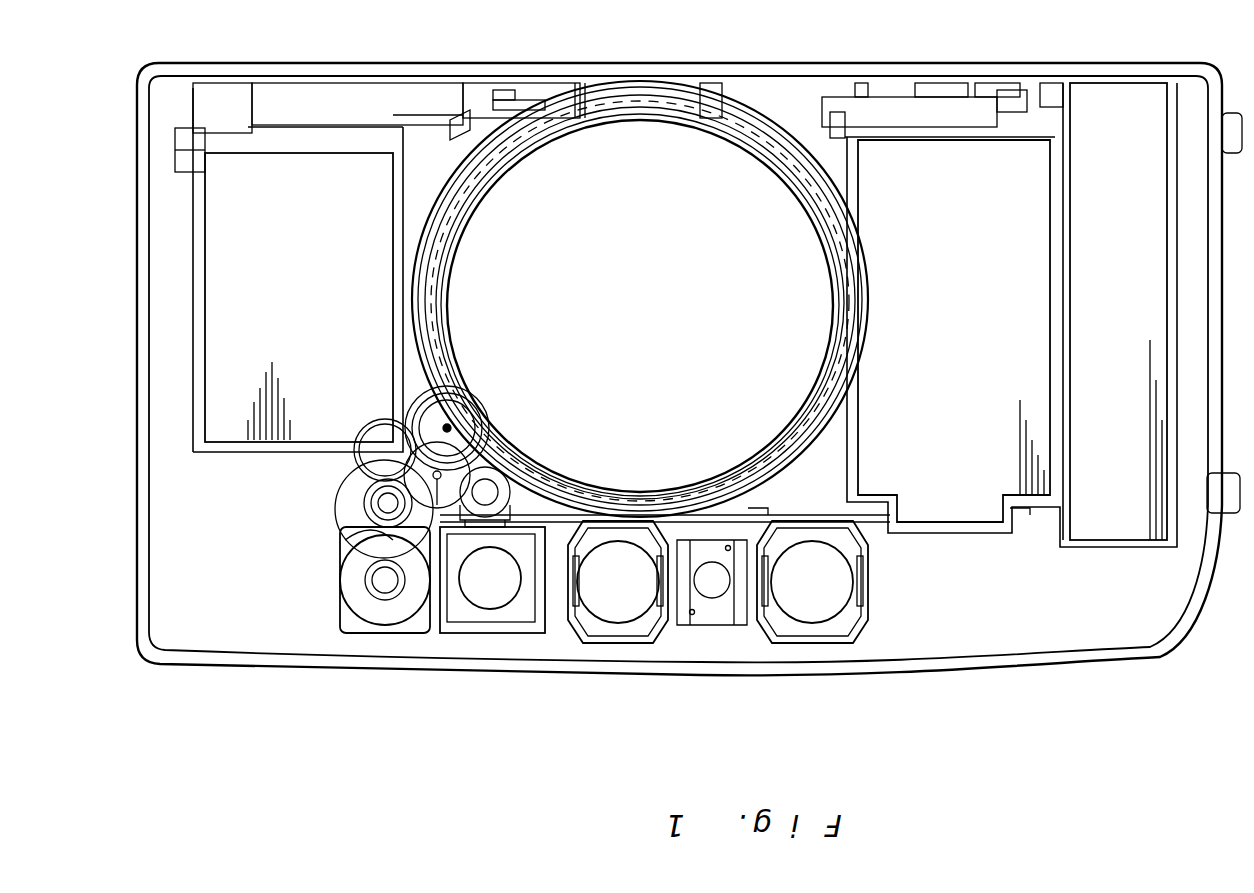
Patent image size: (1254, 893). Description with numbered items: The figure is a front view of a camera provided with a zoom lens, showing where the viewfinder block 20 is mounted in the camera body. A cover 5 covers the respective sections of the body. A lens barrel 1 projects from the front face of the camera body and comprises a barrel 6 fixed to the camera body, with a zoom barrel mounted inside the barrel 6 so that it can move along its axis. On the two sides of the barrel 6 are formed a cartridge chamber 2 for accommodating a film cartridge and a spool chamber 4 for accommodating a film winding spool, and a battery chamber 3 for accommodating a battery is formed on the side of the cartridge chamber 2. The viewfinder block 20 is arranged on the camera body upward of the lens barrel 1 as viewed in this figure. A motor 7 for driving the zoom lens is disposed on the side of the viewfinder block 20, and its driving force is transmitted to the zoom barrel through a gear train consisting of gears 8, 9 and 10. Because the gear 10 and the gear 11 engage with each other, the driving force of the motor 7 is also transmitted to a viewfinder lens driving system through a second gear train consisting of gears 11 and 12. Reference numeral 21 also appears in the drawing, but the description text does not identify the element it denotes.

The lens barrel 1 is at (663, 249).
The cartridge chamber 2 is at (939, 212).
The battery chamber 3 is at (1099, 212).
The spool chamber 4 is at (288, 224).
The cover 5 is at (195, 665).
The barrel 6 is at (557, 90).
The motor 7 is at (383, 622).
The gear 8 is at (347, 495).
The gear 9 is at (377, 431).
The gear 10 is at (447, 428).
The gear 11 is at (480, 440).
The gear 12 is at (503, 480).
The viewfinder block 20 is at (557, 618).
The reel 21 is at (752, 620).